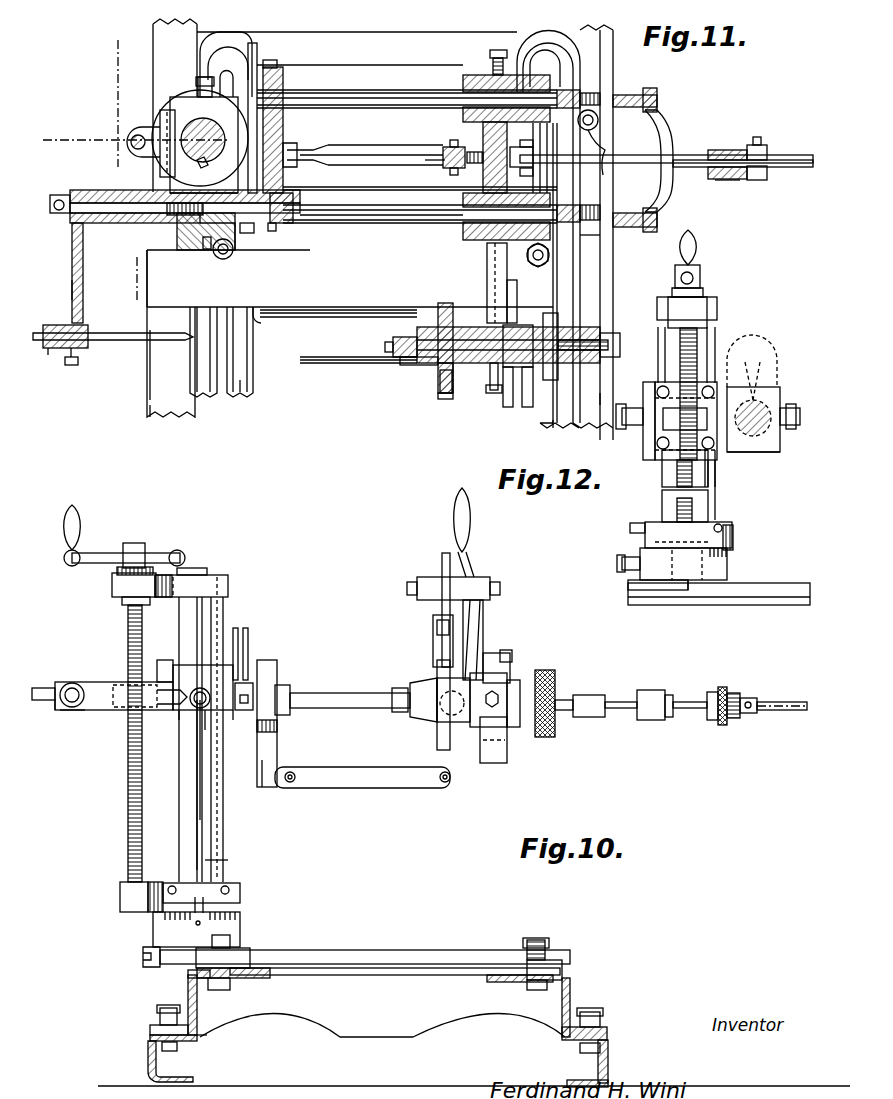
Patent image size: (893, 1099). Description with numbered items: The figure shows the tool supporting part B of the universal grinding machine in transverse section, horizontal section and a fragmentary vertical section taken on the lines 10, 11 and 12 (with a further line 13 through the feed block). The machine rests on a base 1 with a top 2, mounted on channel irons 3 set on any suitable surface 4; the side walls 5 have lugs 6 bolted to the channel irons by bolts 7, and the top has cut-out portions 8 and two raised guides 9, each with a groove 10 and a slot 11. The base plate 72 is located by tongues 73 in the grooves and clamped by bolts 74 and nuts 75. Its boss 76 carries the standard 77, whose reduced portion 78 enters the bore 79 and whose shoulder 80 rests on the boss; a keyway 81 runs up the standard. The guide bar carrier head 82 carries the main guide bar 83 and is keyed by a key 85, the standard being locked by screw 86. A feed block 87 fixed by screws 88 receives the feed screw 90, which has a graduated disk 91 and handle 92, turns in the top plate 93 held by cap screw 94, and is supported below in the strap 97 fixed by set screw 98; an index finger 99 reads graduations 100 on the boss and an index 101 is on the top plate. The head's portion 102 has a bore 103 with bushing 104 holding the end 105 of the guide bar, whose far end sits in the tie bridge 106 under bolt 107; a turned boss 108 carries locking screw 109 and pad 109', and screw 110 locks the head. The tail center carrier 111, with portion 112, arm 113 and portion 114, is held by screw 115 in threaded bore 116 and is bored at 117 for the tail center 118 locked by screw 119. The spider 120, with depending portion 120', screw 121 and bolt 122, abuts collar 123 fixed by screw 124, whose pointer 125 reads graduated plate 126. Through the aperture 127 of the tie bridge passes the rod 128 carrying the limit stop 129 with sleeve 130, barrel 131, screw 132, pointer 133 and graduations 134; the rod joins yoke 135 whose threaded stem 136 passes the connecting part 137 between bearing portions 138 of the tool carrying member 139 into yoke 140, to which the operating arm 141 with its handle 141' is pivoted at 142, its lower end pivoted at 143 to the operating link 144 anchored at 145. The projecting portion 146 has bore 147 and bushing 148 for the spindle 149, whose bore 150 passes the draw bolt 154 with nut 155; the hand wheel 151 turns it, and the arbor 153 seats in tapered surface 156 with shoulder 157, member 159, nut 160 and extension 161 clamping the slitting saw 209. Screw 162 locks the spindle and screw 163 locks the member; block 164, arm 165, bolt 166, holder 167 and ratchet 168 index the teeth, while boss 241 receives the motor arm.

In FIG. 11, the base 1 is at (183, 365).
In FIG. 10, the base 1 is at (188, 998).
In FIG. 11, the top 2 is at (306, 363).
In FIG. 10, the top 2 is at (258, 978).
In FIG. 11, the channel irons 3 is at (160, 405).
In FIG. 10, the channel irons 3 is at (148, 1068).
In FIG. 10, the surface 4 is at (225, 1086).
In FIG. 10, the side walls 5 is at (200, 1030).
In FIG. 10, the lugs 6 is at (150, 1035).
In FIG. 10, the bolts 7 is at (155, 1012).
In FIG. 10, the cut-out portions 8 is at (345, 978).
In FIG. 11, the guides 9 is at (245, 374).
In FIG. 10, the guides 9 is at (195, 970).
In FIG. 11, the groove 10 is at (232, 328).
In FIG. 12, the groove 10 is at (626, 384).
In FIG. 10, the groove 10 is at (240, 970).
In FIG. 11, the slot 11 is at (225, 350).
In FIG. 10, the slot 11 is at (33, 700).
In FIG. 11, the section line 12 is at (121, 61).
In FIG. 11, the section line 13 is at (302, 128).
In FIG. 11, the base plate 72 is at (305, 317).
In FIG. 12, the base plate 72 is at (770, 605).
In FIG. 10, the base plate 72 is at (462, 945).
In FIG. 10, the tongues 73 is at (235, 960).
In FIG. 11, the bolts 74 is at (585, 243).
In FIG. 10, the bolts 74 is at (220, 940).
In FIG. 10, the nuts 75 is at (160, 960).
In FIG. 12, the boss 76 is at (640, 585).
In FIG. 10, the boss 76 is at (155, 930).
In FIG. 11, the standard 77 is at (170, 110).
In FIG. 12, the standard 77 is at (668, 503).
In FIG. 10, the standard 77 is at (222, 838).
In FIG. 12, the downwardly extending portion 78 is at (672, 605).
In FIG. 12, the bore 79 is at (712, 600).
In FIG. 12, the shoulder 80 is at (645, 543).
In FIG. 11, the keyway 81 is at (182, 140).
In FIG. 12, the keyway 81 is at (660, 430).
In FIG. 10, the keyway 81 is at (184, 813).
In FIG. 11, the guide bar carrier head 82 is at (190, 102).
In FIG. 12, the guide bar carrier head 82 is at (665, 462).
In FIG. 10, the guide bar carrier head 82 is at (185, 720).
In FIG. 11, the main guide bar 83 is at (333, 230).
In FIG. 10, the main guide bar 83 is at (340, 695).
In FIG. 11, the key 85 is at (190, 180).
In FIG. 12, the key 85 is at (712, 470).
In FIG. 10, the key 85 is at (200, 793).
In FIG. 12, the screw 86 is at (622, 565).
In FIG. 11, the feed block 87 is at (130, 130).
In FIG. 10, the feed block 87 is at (100, 710).
In FIG. 11, the screws 88 is at (160, 120).
In FIG. 12, the screws 88 is at (710, 390).
In FIG. 10, the screws 88 is at (157, 680).
In FIG. 12, the feed screw 90 is at (700, 370).
In FIG. 10, the feed screw 90 is at (128, 838).
In FIG. 10, the graduated disk 91 is at (115, 570).
In FIG. 12, the handle 92 is at (697, 255).
In FIG. 10, the handle 92 is at (88, 555).
In FIG. 12, the top plate 93 is at (717, 305).
In FIG. 10, the top plate 93 is at (125, 585).
In FIG. 10, the cap screw 94 is at (198, 575).
In FIG. 12, the strap 97 is at (715, 508).
In FIG. 10, the strap 97 is at (120, 893).
In FIG. 12, the set screw 98 is at (630, 528).
In FIG. 12, the index finger 99 is at (735, 545).
In FIG. 10, the index finger 99 is at (240, 893).
In FIG. 12, the graduations 100 is at (732, 572).
In FIG. 10, the graduations 100 is at (178, 930).
In FIG. 10, the index 101 is at (125, 595).
In FIG. 11, the outwardly extending portion 102 is at (205, 250).
In FIG. 12, the outwardly extending portion 102 is at (745, 452).
In FIG. 10, the outwardly extending portion 102 is at (207, 715).
In FIG. 11, the bore 103 is at (190, 232).
In FIG. 11, the bushing 104 is at (147, 245).
In FIG. 11, the end 105 is at (205, 165).
In FIG. 11, the tie bridge 106 is at (668, 200).
In FIG. 10, the tie bridge 106 is at (645, 690).
In FIG. 11, the bolt 107 is at (660, 220).
In FIG. 10, the bolt 107 is at (665, 715).
In FIG. 11, the turned boss 108 is at (212, 283).
In FIG. 12, the turned boss 108 is at (780, 400).
In FIG. 10, the turned boss 108 is at (195, 690).
In FIG. 11, the locking screw 109 is at (222, 263).
In FIG. 12, the locking screw 109 is at (799, 430).
In FIG. 10, the locking screw 109 is at (178, 660).
In FIG. 11, the pad 109' is at (263, 247).
In FIG. 11, the locking screw 110 is at (218, 75).
In FIG. 11, the tail center carrier 111 is at (68, 195).
In FIG. 10, the tail center carrier 111 is at (76, 677).
In FIG. 11, the horizontally extending portion 112 is at (70, 228).
In FIG. 11, the arm 113 is at (72, 289).
In FIG. 11, the horizontally extending portion 114 is at (58, 348).
In FIG. 10, the horizontally extending portion 114 is at (62, 710).
In FIG. 11, the locking screw 115 is at (67, 198).
In FIG. 11, the threaded bore 116 is at (130, 207).
In FIG. 11, the bore 117 is at (65, 325).
In FIG. 11, the tail center 118 is at (140, 340).
In FIG. 11, the screw 119 is at (80, 361).
In FIG. 10, the screw 119 is at (72, 715).
In FIG. 11, the spider 120 is at (300, 126).
In FIG. 10, the spider 120 is at (286, 718).
In FIG. 10, the depending portion 120' is at (292, 764).
In FIG. 11, the screw 121 is at (256, 55).
In FIG. 11, the bolt 122 is at (657, 100).
In FIG. 11, the collar 123 is at (272, 228).
In FIG. 10, the collar 123 is at (252, 683).
In FIG. 11, the screw 124 is at (262, 240).
In FIG. 10, the screw 124 is at (275, 730).
In FIG. 12, the pointer 125 is at (755, 372).
In FIG. 10, the pointer 125 is at (247, 645).
In FIG. 10, the graduated plate 126 is at (237, 632).
In FIG. 11, the central aperture 127 is at (670, 150).
In FIG. 11, the rod 128 is at (685, 160).
In FIG. 10, the rod 128 is at (690, 700).
In FIG. 11, the limit stop 129 is at (738, 180).
In FIG. 11, the sleeve 130 is at (735, 148).
In FIG. 11, the barrel 131 is at (715, 182).
In FIG. 10, the barrel 131 is at (712, 722).
In FIG. 11, the screw 132 is at (762, 142).
In FIG. 11, the pointer 133 is at (768, 175).
In FIG. 10, the pointer 133 is at (748, 715).
In FIG. 11, the mill graduations 134 is at (535, 170).
In FIG. 10, the mill graduations 134 is at (733, 693).
In FIG. 11, the yoke 135 is at (480, 170).
In FIG. 11, the threaded stem 136 is at (490, 135).
In FIG. 11, the connecting part 137 is at (530, 185).
In FIG. 11, the bearing portions 138 is at (475, 78).
In FIG. 11, the tool carrying member 139 is at (521, 306).
In FIG. 10, the tool carrying member 139 is at (510, 745).
In FIG. 11, the yoke 140 is at (470, 150).
In FIG. 11, the operating arm 141 is at (413, 174).
In FIG. 10, the operating arm 141 is at (487, 612).
In FIG. 10, the operating arm handle 141' is at (488, 520).
In FIG. 11, the pivot 142 is at (443, 150).
In FIG. 10, the pivot 142 is at (440, 710).
In FIG. 10, the pivot 143 is at (450, 785).
In FIG. 11, the operating link 144 is at (322, 148).
In FIG. 10, the operating link 144 is at (415, 788).
In FIG. 11, the anchor 145 is at (332, 110).
In FIG. 10, the anchor 145 is at (292, 785).
In FIG. 11, the outwardly projecting portion 146 is at (487, 270).
In FIG. 10, the outwardly projecting portion 146 is at (485, 740).
In FIG. 11, the bore 147 is at (500, 320).
In FIG. 11, the bushing 148 is at (480, 385).
In FIG. 11, the spindle 149 is at (497, 327).
In FIG. 11, the bore 150 is at (440, 327).
In FIG. 11, the hand wheel 151 is at (558, 330).
In FIG. 10, the hand wheel 151 is at (558, 680).
In FIG. 11, the arbor 153 is at (438, 365).
In FIG. 11, the draw bolt 154 is at (603, 340).
In FIG. 10, the draw bolt 154 is at (590, 717).
In FIG. 11, the nut 155 is at (603, 318).
In FIG. 11, the tapered inner surface 156 is at (440, 375).
In FIG. 11, the shoulder 157 is at (445, 395).
In FIG. 11, the member 159 is at (438, 327).
In FIG. 10, the member 159 is at (437, 675).
In FIG. 11, the nut 160 is at (393, 340).
In FIG. 10, the nut 160 is at (412, 683).
In FIG. 11, the extension 161 is at (392, 348).
In FIG. 10, the extension 161 is at (392, 710).
In FIG. 11, the screw 162 is at (540, 325).
In FIG. 10, the screw 162 is at (522, 735).
In FIG. 11, the screw 163 is at (500, 48).
In FIG. 10, the block 164 is at (500, 660).
In FIG. 10, the arm 165 is at (483, 625).
In FIG. 10, the bolt 166 is at (512, 660).
In FIG. 10, the holder 167 is at (439, 567).
In FIG. 10, the ratchet 168 is at (429, 658).
In FIG. 11, the slitting saw 209 is at (442, 400).
In FIG. 10, the slitting saw 209 is at (440, 740).
In FIG. 11, the boss 241 is at (552, 255).
In FIG. 10, the boss 241 is at (510, 765).
In FIG. 10, the tool supporting part B is at (237, 854).